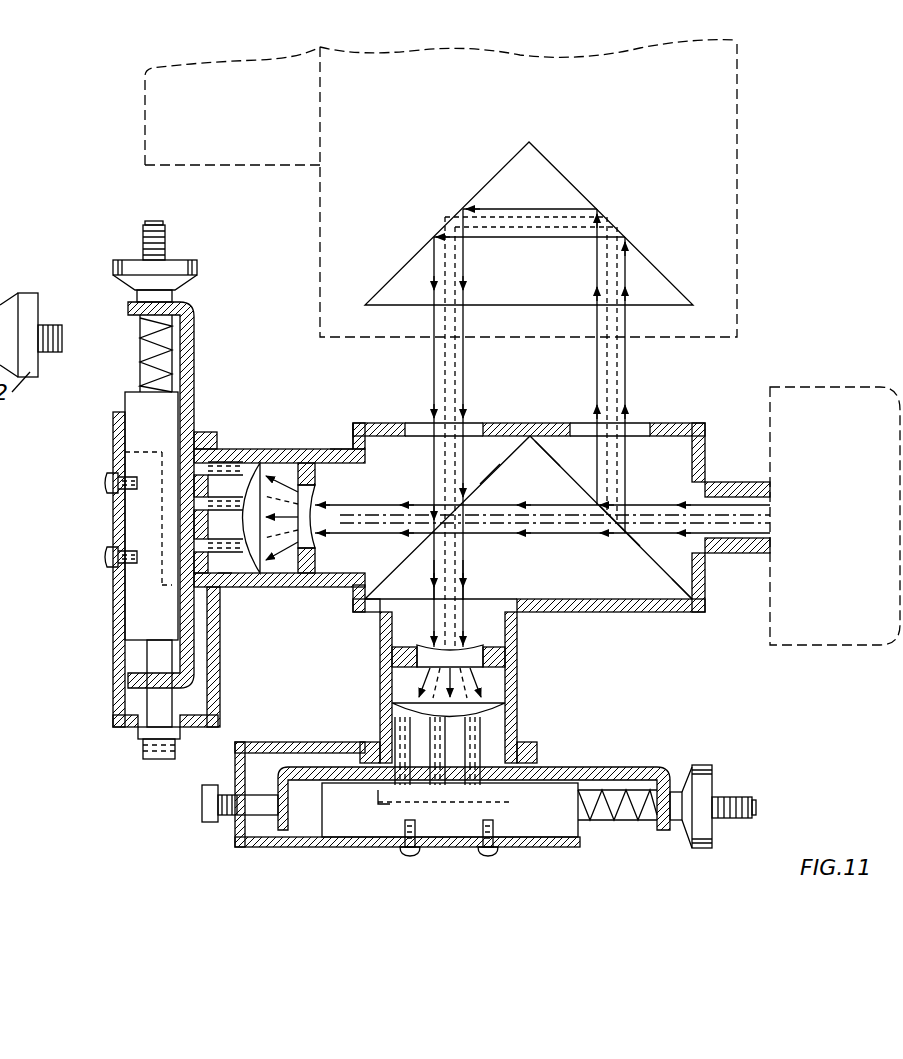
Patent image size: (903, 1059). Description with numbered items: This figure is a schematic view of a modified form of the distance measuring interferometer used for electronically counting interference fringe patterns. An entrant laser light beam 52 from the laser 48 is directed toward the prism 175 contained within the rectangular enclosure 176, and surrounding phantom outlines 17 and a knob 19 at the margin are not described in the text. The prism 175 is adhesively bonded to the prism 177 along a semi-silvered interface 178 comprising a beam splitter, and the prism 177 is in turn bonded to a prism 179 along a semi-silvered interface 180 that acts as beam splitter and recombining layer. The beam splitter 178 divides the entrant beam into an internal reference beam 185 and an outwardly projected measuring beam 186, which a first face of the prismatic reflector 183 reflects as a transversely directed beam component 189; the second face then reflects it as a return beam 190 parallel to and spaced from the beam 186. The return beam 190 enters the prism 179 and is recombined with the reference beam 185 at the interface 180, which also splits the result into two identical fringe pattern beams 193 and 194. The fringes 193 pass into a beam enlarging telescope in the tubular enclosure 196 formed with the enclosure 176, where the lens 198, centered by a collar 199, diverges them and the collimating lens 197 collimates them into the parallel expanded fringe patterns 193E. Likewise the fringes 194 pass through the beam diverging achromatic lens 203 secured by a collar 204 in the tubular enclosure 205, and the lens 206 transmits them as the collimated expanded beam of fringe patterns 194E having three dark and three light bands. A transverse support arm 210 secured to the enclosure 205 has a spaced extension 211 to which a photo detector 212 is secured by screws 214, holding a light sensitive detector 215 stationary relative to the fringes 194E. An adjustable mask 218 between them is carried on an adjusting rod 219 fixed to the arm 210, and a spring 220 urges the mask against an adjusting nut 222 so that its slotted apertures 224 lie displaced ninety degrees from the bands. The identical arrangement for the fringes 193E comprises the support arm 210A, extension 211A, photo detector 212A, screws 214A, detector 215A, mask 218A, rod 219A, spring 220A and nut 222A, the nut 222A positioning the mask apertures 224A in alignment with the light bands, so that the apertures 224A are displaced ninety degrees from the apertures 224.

The optical head housing (phantom) 17 is at (318, 330).
The adjusting knob 19 is at (52, 323).
The laser 48 is at (828, 385).
The entrant laser light beam 52 is at (706, 500).
The prism 175 is at (690, 606).
The rectangular enclosure 176 is at (690, 423).
The prism 177 is at (516, 452).
The semi-silvered interface 178 is at (546, 446).
The prism 179 is at (368, 432).
The semi-silvered interface 180 is at (488, 472).
The prismatic reflector 183 is at (545, 180).
The internal reference beam 185 is at (568, 525).
The outwardly projected measuring beam 186 is at (627, 341).
The transversely directed beam component 189 is at (577, 222).
The return beam 190 is at (440, 354).
The interference fringe patterns 193 is at (372, 517).
The expanded fringe patterns 193E is at (232, 592).
The interference fringe patterns 194 is at (448, 570).
The expanded beam of fringe patterns 194E is at (460, 752).
The tubular enclosure 196 is at (240, 450).
The collimating lens 197 is at (255, 578).
The lens 198 is at (340, 447).
The collar 199 is at (302, 580).
The beam diverging achromatic lens 203 is at (428, 678).
The collar 204 is at (507, 652).
The tubular enclosure 205 is at (512, 682).
The lens 206 is at (520, 714).
The transverse support arm 210 is at (240, 762).
The transverse support arm 210A is at (218, 703).
The spaced extension 211 is at (287, 842).
The spaced extension 211A is at (120, 652).
The photo detector 212 is at (557, 822).
The photo detector 212A is at (130, 590).
The screws 214 is at (408, 852).
The screws 214A is at (108, 484).
The light sensitive detector 215 is at (378, 800).
The light sensitive detector 215A is at (165, 462).
The adjustable mask 218 is at (660, 770).
The mask 218A is at (196, 322).
The adjusting rod 219 is at (752, 806).
The adjusting rod 219A is at (160, 234).
The spring 220 is at (635, 821).
The spring 220A is at (150, 378).
The adjusting nut 222 is at (705, 790).
The adjusting nut 222A is at (198, 270).
The slotted apertures 224 is at (480, 787).
The mask apertures 224A is at (212, 562).